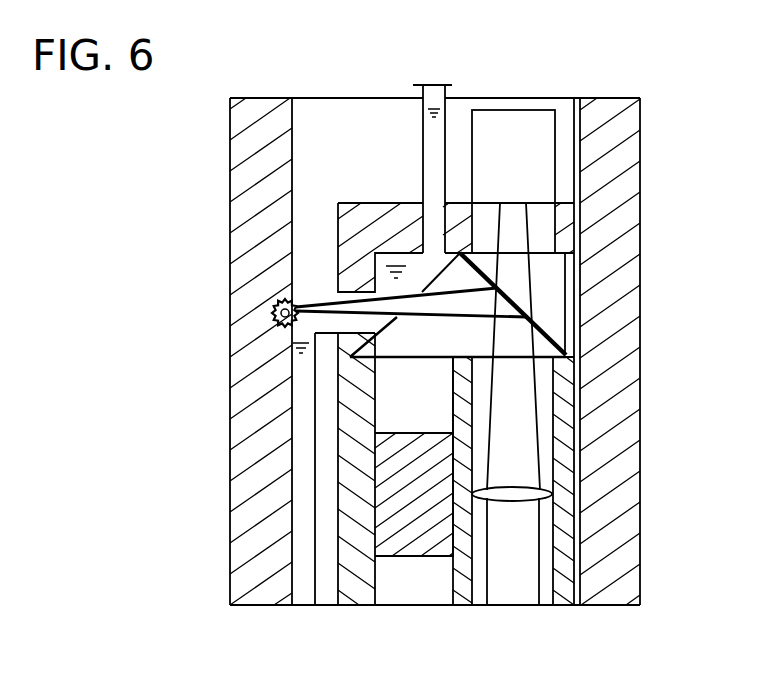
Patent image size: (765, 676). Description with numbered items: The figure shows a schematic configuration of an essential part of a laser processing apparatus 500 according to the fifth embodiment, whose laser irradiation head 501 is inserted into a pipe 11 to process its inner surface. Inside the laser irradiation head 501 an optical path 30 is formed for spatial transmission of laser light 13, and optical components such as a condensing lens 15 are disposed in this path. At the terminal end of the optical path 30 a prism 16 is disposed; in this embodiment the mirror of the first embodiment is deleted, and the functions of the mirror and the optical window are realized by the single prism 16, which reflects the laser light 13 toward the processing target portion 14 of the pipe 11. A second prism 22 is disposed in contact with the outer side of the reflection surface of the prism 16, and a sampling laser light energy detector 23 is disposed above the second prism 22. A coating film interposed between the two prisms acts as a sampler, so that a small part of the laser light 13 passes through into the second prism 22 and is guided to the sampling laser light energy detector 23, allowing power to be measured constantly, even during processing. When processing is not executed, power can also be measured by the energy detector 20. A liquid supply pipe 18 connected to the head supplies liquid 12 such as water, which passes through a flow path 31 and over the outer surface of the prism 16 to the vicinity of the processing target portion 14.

The laser processing apparatus 500 is at (558, 84).
The laser irradiation head 501 is at (432, 288).
The pipe 11 is at (630, 138).
The liquid 12 is at (303, 423).
The laser light 13 is at (511, 590).
The processing target portion 14 is at (276, 311).
The condensing lens 15 is at (553, 492).
The prism 16 is at (435, 290).
The liquid supply pipe 18 is at (423, 139).
The energy detector 20 is at (418, 545).
The second prism 22 is at (548, 310).
The sampling laser light energy detector 23 is at (517, 117).
The optical path 30 is at (542, 392).
The flow path 31 is at (375, 207).